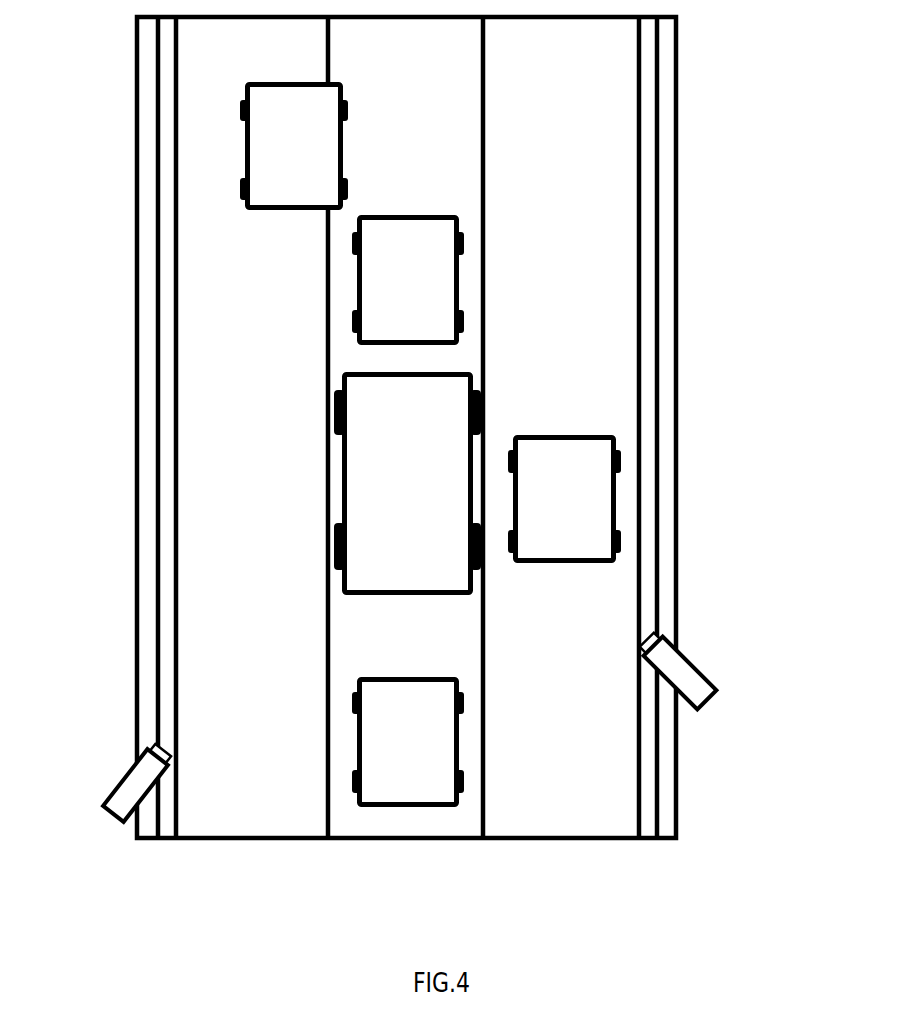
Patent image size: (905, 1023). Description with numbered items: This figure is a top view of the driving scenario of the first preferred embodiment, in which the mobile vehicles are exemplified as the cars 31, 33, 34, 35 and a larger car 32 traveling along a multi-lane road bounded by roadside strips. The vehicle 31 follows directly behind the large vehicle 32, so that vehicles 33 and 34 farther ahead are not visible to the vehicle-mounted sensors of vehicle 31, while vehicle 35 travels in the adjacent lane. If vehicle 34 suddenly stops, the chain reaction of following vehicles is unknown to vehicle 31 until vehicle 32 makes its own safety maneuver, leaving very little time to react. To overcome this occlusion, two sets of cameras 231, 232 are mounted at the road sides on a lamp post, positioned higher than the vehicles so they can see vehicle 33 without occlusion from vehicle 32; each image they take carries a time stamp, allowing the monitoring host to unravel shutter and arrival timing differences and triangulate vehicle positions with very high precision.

The car 31 is at (448, 728).
The larger car 32 is at (357, 448).
The car 33 is at (461, 283).
The car 34 is at (346, 148).
The car 35 is at (565, 433).
The camera set 231 is at (133, 750).
The camera set 232 is at (717, 672).